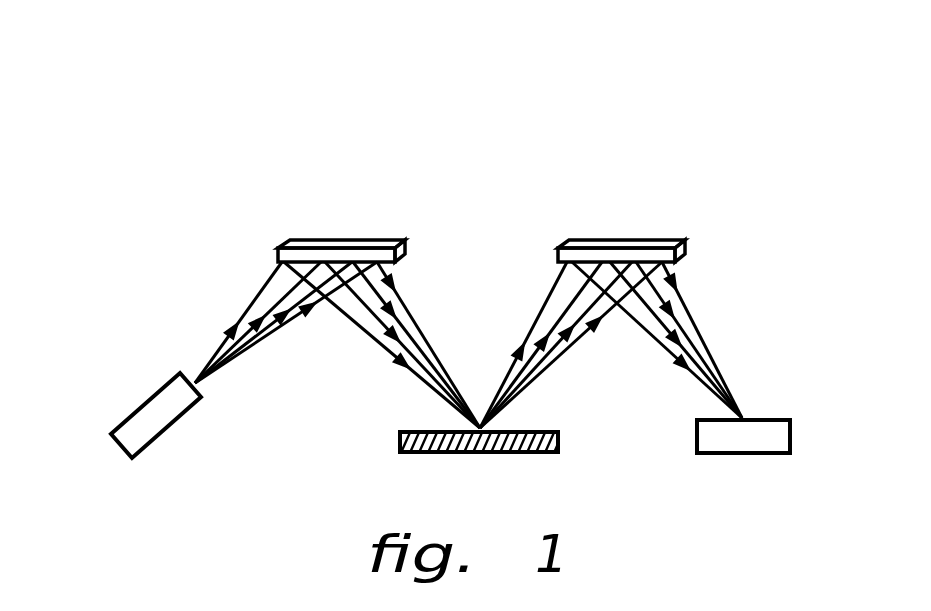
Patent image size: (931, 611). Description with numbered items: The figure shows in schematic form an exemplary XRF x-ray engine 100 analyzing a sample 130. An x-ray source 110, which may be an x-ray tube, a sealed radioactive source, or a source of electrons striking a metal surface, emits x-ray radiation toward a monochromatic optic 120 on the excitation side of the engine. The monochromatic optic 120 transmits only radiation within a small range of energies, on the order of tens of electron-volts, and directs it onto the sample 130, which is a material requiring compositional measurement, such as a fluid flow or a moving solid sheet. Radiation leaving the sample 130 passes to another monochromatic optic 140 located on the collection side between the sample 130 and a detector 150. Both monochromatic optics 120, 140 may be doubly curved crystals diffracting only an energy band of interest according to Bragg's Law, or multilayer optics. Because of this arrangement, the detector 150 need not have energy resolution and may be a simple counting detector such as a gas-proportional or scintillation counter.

The XRF x-ray engine 100 is at (514, 110).
The x-ray source 110 is at (147, 399).
The monochromatic optic 120 is at (352, 242).
The sample 130 is at (400, 440).
The monochromatic optic 140 is at (625, 242).
The detector 150 is at (697, 430).